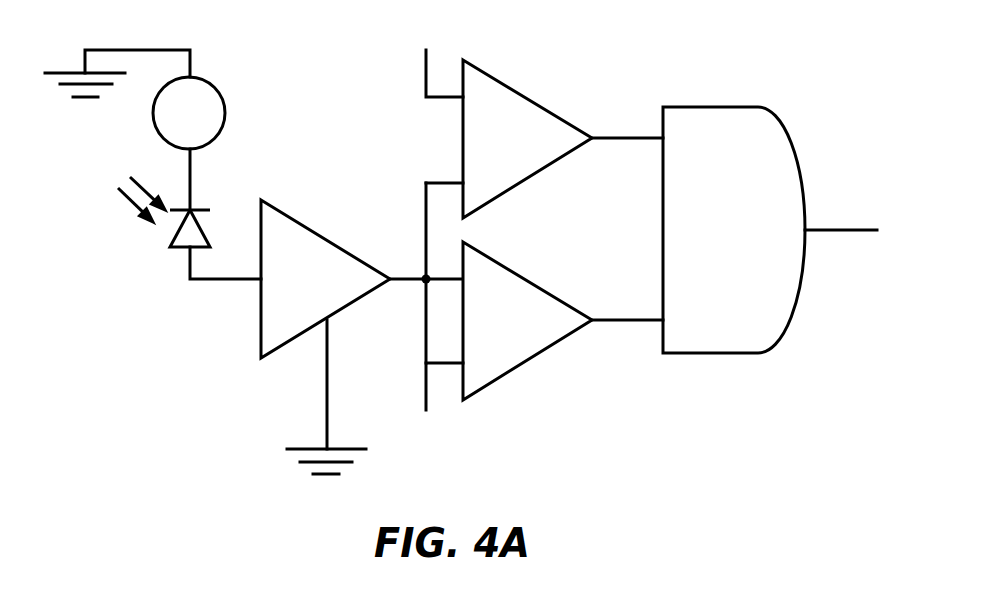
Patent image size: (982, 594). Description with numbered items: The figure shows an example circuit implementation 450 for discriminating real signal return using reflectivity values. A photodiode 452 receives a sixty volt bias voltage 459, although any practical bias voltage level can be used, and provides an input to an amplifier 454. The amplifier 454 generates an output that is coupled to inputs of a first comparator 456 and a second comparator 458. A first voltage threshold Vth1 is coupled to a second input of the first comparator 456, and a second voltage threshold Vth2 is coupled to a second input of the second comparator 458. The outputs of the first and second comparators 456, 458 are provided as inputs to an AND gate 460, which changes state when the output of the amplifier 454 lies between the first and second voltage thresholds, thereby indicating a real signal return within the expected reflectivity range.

The circuit implementation 450 is at (694, 31).
The photodiode 452 is at (168, 249).
The amplifier 454 is at (276, 310).
The first comparator 456 is at (489, 151).
The second comparator 458 is at (489, 333).
The bias voltage 459 is at (226, 113).
The AND gate 460 is at (714, 257).